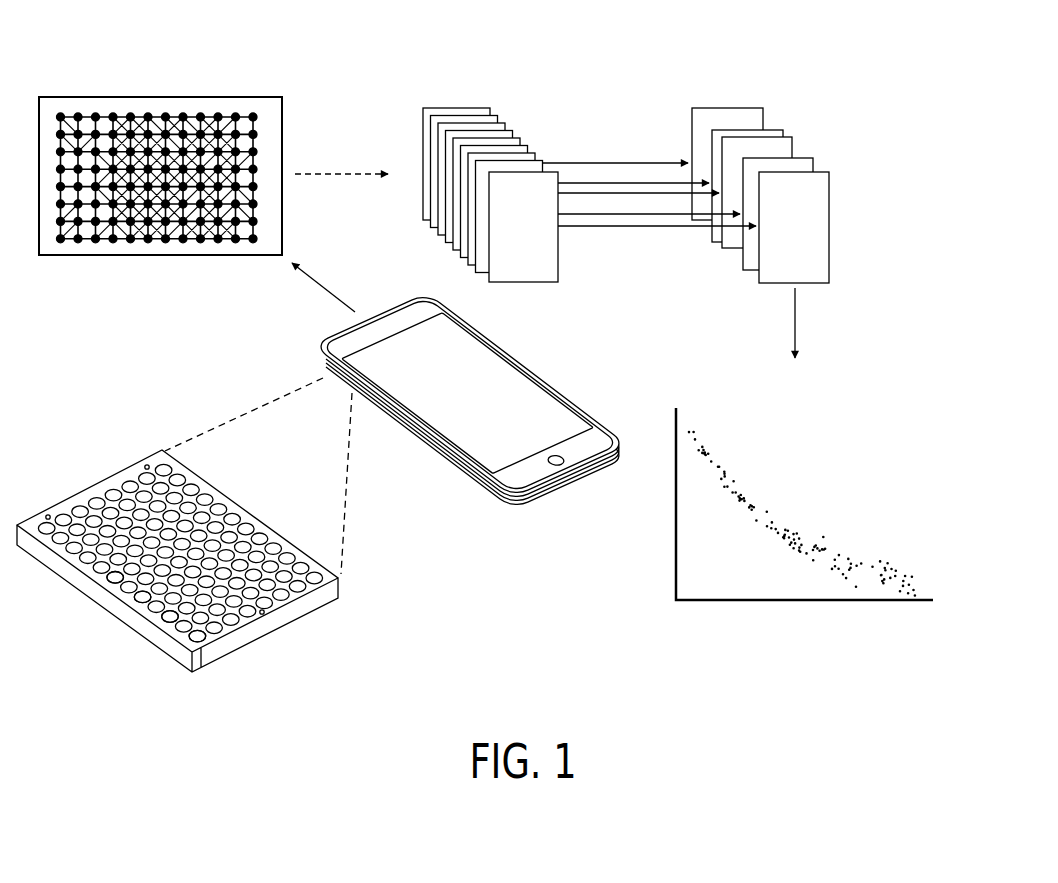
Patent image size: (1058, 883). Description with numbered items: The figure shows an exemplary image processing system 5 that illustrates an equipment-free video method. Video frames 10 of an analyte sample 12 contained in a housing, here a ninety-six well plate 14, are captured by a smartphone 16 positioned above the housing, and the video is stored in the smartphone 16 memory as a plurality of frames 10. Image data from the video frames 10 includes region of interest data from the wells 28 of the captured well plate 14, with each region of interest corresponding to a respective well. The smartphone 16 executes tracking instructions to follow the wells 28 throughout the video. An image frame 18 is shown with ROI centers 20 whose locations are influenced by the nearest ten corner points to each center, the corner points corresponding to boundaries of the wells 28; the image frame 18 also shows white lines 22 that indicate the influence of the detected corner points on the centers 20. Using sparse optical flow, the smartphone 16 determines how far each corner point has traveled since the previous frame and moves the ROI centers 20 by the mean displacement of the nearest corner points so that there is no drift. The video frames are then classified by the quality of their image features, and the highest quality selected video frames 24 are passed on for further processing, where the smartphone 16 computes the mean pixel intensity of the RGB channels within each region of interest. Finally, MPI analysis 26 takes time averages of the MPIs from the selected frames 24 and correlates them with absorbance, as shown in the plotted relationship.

The image processing system 5 is at (828, 90).
The video frames 10 is at (463, 108).
The analyte sample 12 is at (112, 506).
The well plate 14 is at (208, 573).
The smartphone 16 is at (543, 373).
The image frame 18 is at (183, 158).
The ROI centers 20 is at (165, 108).
The white lines 22 is at (130, 110).
The selected video frames 24 is at (813, 166).
The MPI analysis 26 is at (860, 485).
The wells 28 is at (169, 622).